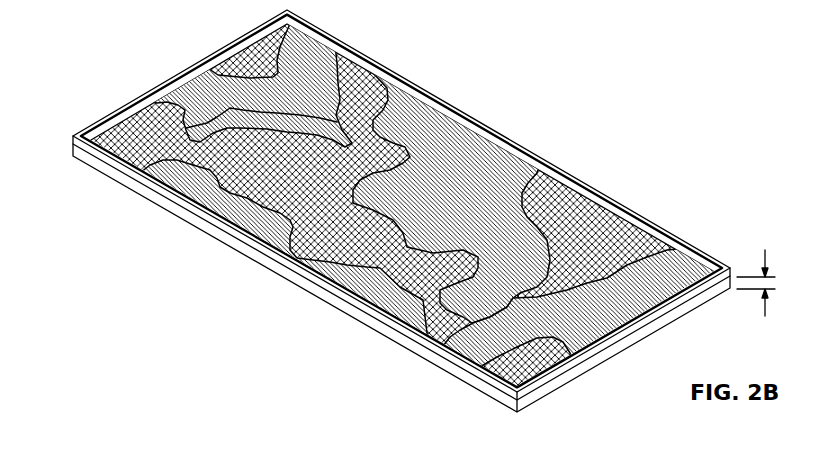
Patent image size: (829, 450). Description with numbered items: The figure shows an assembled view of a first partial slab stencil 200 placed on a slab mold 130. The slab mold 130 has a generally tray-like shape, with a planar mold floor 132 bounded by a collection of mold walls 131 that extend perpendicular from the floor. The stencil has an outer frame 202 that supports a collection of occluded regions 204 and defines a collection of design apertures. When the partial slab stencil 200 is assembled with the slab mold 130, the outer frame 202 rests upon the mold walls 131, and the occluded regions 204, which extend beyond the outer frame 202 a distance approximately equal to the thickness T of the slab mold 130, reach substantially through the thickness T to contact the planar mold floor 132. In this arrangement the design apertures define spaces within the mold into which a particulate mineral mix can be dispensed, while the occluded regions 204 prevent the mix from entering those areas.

The partial slab stencil 200 is at (124, 76).
The slab mold 130 is at (66, 144).
The mold walls 131 is at (183, 210).
The planar mold floor 132 is at (130, 138).
The outer frame 202 is at (118, 175).
The occluded regions 204 is at (322, 37).
The thickness T is at (765, 266).